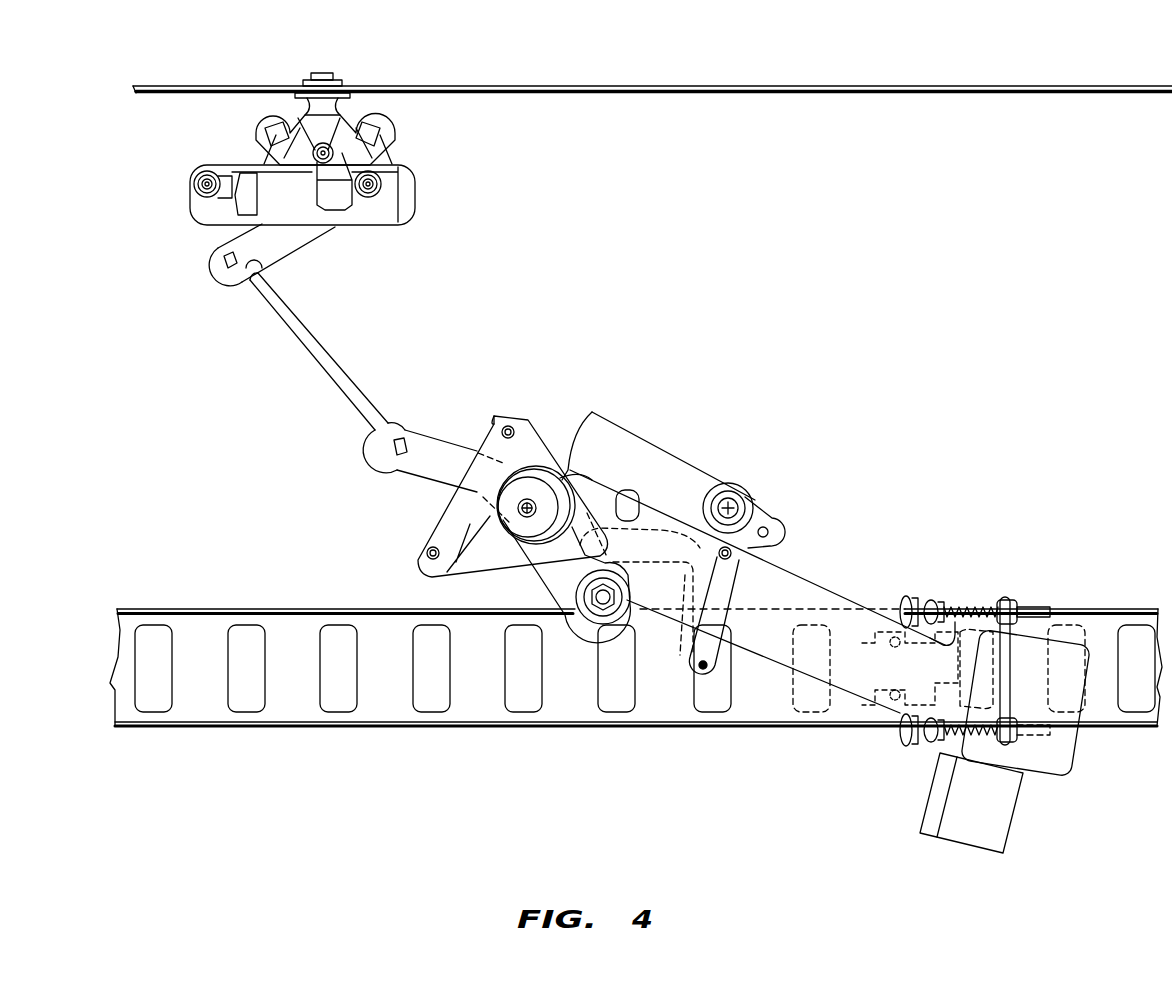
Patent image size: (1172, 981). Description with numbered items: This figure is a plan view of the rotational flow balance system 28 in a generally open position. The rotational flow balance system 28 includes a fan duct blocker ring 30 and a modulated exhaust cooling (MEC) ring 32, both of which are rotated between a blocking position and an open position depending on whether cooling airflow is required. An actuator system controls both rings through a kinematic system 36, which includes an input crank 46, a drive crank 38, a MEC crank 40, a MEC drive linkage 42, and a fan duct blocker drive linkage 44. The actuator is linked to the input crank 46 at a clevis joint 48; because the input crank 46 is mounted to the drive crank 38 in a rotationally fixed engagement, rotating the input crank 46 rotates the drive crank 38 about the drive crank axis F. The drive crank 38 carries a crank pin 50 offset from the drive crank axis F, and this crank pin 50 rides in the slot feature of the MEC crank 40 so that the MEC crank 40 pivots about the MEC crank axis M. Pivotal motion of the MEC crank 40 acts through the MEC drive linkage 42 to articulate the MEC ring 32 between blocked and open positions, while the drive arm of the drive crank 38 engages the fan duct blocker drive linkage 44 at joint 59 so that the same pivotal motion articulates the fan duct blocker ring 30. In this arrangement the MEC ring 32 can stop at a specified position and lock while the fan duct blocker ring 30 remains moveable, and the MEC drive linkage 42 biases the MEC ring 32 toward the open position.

The rotational flow balance system 28 is at (141, 224).
The fan duct blocker ring 30 is at (848, 85).
The modulated exhaust cooling (MEC) ring 32 is at (150, 728).
The kinematic system 36 is at (920, 471).
The drive crank 38 is at (405, 485).
The MEC crank 40 is at (680, 445).
The MEC drive linkage 42 is at (762, 680).
The fan duct blocker drive linkage 44 is at (295, 352).
The input crank 46 is at (550, 578).
The clevis joint 48 is at (584, 624).
The crank pin 50 is at (624, 491).
The joint 59 is at (403, 438).
The drive crank axis F is at (529, 504).
The MEC crank axis M is at (729, 505).